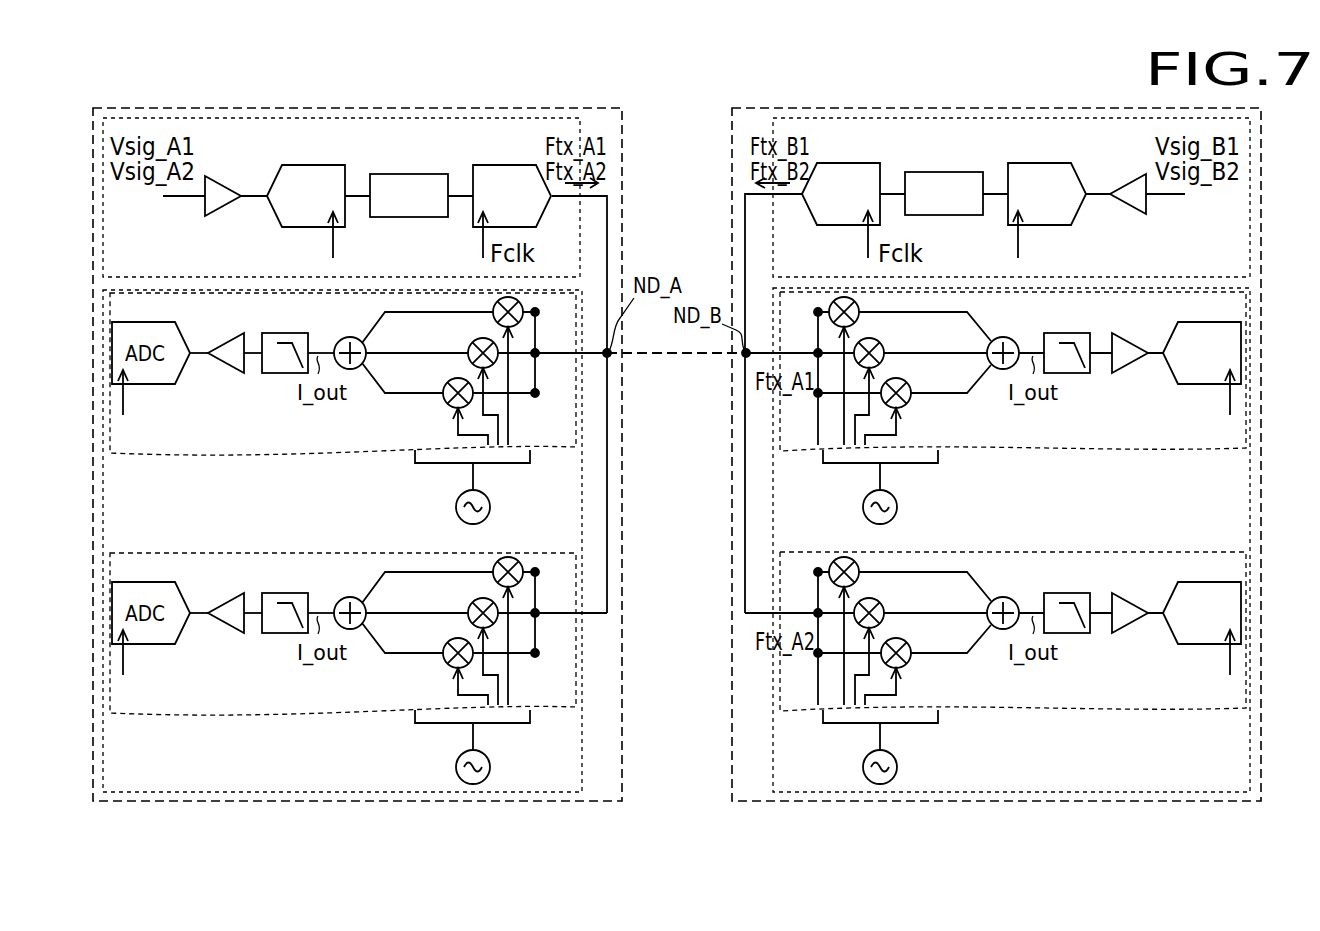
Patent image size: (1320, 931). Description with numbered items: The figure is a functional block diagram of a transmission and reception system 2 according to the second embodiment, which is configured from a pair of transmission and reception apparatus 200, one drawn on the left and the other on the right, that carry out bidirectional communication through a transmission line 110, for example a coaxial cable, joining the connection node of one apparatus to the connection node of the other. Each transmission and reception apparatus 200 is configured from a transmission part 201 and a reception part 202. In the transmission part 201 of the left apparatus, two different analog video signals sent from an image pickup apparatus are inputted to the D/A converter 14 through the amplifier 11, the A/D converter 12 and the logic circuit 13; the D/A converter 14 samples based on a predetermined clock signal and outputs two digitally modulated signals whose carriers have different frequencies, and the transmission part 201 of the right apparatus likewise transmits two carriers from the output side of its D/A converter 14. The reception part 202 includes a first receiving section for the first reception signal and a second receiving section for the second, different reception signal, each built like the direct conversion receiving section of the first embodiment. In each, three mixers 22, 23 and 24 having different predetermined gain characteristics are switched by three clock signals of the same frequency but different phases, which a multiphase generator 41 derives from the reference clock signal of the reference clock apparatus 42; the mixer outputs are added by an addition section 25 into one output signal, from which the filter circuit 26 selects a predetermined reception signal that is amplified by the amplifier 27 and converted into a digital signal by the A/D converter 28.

The transmission and reception system 2 is at (674, 66).
The amplifier 11 is at (225, 185).
The A/D converter 12 is at (304, 165).
The logic circuit 13 is at (404, 174).
The D/A converter 14 is at (506, 165).
The mixer 22 is at (855, 301).
The mixer 23 is at (881, 342).
The mixer 24 is at (907, 382).
The addition section 25 is at (1003, 337).
The filter circuit 26 is at (1067, 332).
The amplifier 27 is at (1128, 342).
The A/D converter 28 is at (1190, 385).
The multiphase generator 41 is at (835, 466).
The reference clock apparatus 42 is at (892, 496).
The transmission line 110 is at (675, 356).
The transmission and reception apparatus 200 is at (338, 107).
The transmission part 201 is at (144, 277).
The reception part 202 is at (1203, 790).